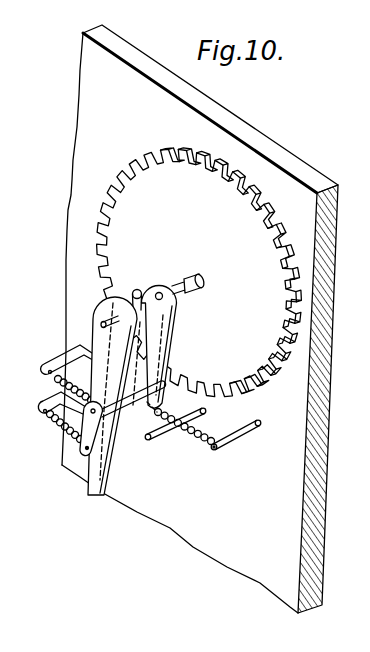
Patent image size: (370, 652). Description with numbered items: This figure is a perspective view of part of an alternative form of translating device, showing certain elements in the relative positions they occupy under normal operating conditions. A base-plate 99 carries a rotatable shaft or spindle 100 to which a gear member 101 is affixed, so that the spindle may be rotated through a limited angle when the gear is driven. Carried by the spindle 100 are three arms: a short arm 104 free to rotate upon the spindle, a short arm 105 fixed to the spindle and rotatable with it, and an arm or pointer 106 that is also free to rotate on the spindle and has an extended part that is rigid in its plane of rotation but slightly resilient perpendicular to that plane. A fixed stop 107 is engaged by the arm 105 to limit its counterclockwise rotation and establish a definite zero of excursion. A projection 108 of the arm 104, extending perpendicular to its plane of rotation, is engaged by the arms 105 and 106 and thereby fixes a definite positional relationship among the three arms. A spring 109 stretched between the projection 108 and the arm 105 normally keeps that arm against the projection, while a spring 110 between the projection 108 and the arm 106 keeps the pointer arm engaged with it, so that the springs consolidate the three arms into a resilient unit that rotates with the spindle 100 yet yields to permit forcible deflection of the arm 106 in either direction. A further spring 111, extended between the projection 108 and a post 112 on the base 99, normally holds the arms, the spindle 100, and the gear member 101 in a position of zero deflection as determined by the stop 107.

The base-plate 99 is at (305, 173).
The rotatable shaft or spindle 100 is at (183, 285).
The gear member 101 is at (158, 148).
The short arm 104 is at (175, 322).
The short arm 105 is at (153, 366).
The arm or pointer 106 is at (97, 313).
The fixed stop 107 is at (203, 413).
The projection 108 is at (105, 440).
The spring 109 is at (52, 377).
The spring 110 is at (50, 418).
The spring 111 is at (188, 441).
The post 112 is at (244, 436).